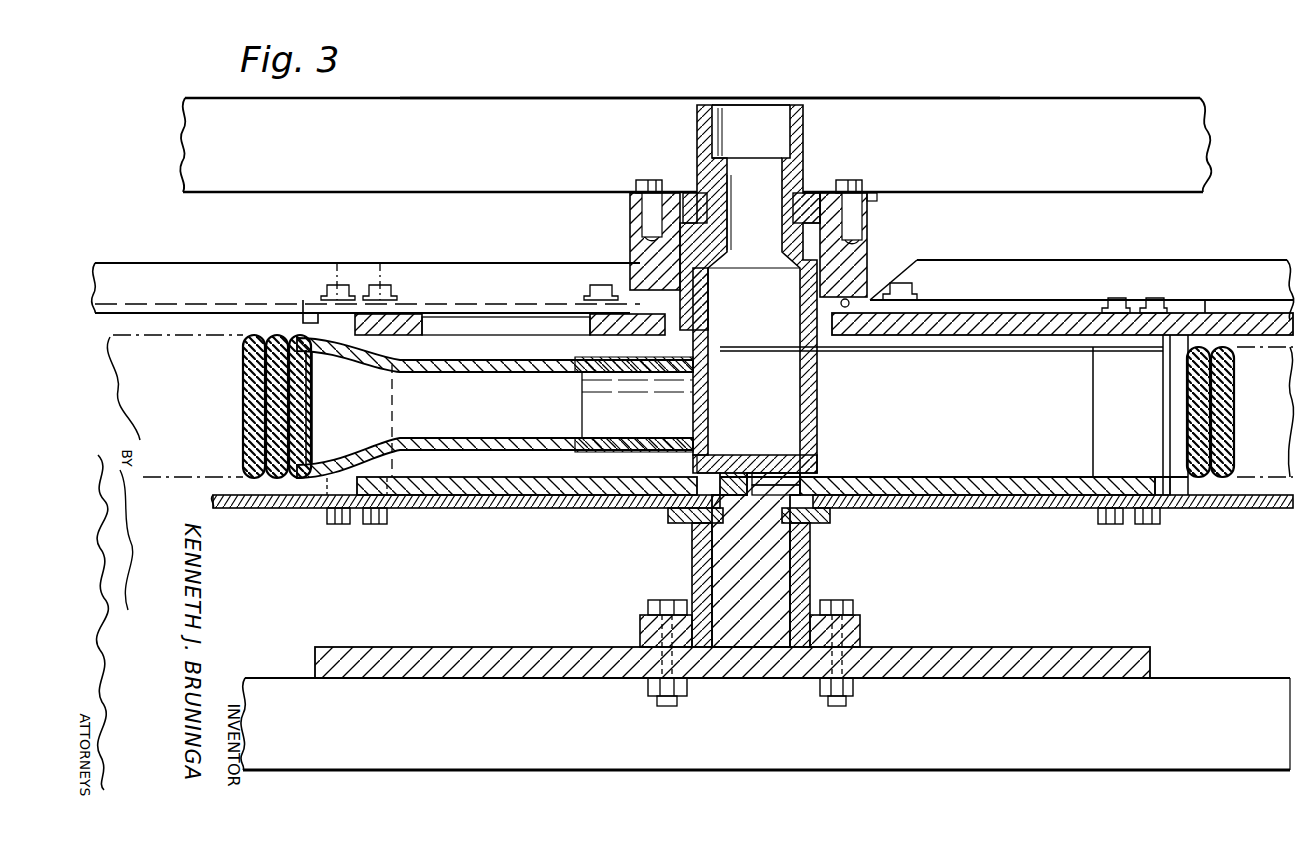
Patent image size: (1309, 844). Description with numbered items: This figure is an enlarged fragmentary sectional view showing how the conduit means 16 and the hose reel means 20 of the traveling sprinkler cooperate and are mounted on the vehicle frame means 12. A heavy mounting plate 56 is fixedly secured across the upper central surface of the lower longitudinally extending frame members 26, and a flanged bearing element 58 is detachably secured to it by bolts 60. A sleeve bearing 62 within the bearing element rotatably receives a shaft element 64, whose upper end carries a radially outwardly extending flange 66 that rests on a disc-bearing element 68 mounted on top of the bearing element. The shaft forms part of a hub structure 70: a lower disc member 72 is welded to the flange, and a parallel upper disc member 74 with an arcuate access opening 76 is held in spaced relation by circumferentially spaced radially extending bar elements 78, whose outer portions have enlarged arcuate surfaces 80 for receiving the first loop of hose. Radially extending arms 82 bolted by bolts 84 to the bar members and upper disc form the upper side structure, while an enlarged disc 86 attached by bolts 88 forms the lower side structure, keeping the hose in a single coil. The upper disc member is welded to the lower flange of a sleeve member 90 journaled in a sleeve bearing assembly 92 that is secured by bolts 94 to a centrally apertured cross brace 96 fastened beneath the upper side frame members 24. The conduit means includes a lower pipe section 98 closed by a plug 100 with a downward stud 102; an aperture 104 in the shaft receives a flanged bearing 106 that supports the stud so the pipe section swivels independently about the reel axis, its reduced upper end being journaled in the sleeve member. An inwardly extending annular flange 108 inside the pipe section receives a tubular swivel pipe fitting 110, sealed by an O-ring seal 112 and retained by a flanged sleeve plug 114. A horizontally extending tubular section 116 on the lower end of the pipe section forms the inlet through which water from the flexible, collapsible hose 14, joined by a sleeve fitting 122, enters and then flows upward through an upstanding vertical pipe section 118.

The vehicle frame means 12 is at (1190, 97).
The flexible, collapsible hose 14 is at (546, 454).
The conduit means 16 is at (806, 105).
The hose reel means 20 is at (1184, 254).
The upper longitudinally extending parallel side frame members 24 is at (1045, 97).
The lower longitudinally extending parallel side frame members 26 is at (764, 756).
The mounting plate 56 is at (496, 647).
The flanged bearing element 58 is at (792, 568).
The bolts 60 is at (852, 608).
The sleeve bearing 62 is at (700, 563).
The shaft element 64 is at (810, 552).
The radially outwardly extending flange 66 is at (684, 510).
The disc-bearing element 68 is at (676, 524).
The hub structure 70 is at (986, 496).
The lower disc member 72 is at (424, 496).
The upper disc member 74 is at (424, 363).
The arcuate access opening 76 is at (430, 315).
The bar elements 78 is at (380, 422).
The enlarged arcuate surfaces 80 is at (312, 310).
The radially extending arms 82 is at (140, 268).
The bolts 84 is at (382, 263).
The enlarged disc 86 is at (232, 510).
The bolts 88 is at (374, 524).
The sleeve member 90 is at (868, 242).
The sleeve bearing assembly 92 is at (875, 263).
The bolts 94 is at (641, 236).
The cross brace 96 is at (868, 197).
The lower pipe section 98 is at (798, 418).
The plug 100 is at (788, 462).
The stud 102 is at (735, 418).
The aperture 104 is at (786, 476).
The flanged bearing 106 is at (797, 512).
The inwardly extending annular flange 108 is at (734, 258).
The tubular swivel pipe fitting 110 is at (708, 178).
The O-ring seal 112 is at (690, 212).
The flanged sleeve plug 114 is at (806, 193).
The horizontally extending tubular section 116 is at (706, 350).
The upstanding vertical pipe section 118 is at (697, 118).
The sleeve fitting 122 is at (710, 390).